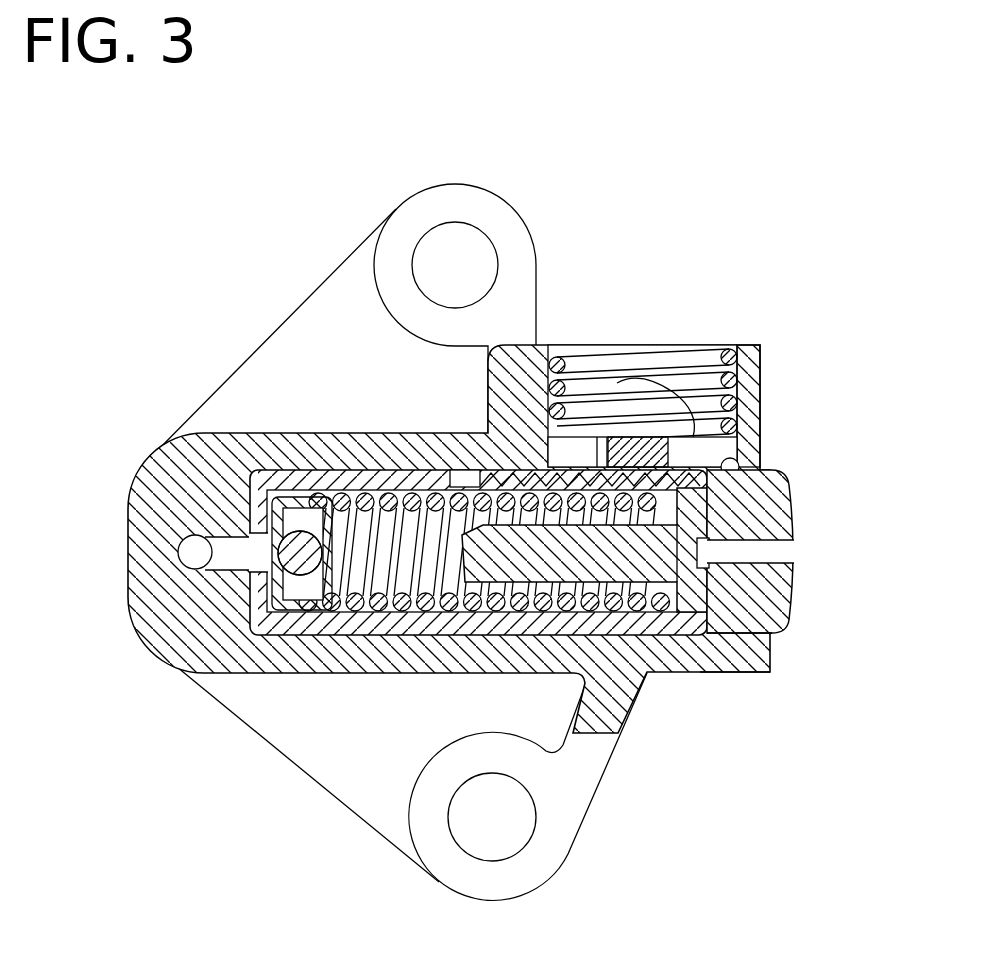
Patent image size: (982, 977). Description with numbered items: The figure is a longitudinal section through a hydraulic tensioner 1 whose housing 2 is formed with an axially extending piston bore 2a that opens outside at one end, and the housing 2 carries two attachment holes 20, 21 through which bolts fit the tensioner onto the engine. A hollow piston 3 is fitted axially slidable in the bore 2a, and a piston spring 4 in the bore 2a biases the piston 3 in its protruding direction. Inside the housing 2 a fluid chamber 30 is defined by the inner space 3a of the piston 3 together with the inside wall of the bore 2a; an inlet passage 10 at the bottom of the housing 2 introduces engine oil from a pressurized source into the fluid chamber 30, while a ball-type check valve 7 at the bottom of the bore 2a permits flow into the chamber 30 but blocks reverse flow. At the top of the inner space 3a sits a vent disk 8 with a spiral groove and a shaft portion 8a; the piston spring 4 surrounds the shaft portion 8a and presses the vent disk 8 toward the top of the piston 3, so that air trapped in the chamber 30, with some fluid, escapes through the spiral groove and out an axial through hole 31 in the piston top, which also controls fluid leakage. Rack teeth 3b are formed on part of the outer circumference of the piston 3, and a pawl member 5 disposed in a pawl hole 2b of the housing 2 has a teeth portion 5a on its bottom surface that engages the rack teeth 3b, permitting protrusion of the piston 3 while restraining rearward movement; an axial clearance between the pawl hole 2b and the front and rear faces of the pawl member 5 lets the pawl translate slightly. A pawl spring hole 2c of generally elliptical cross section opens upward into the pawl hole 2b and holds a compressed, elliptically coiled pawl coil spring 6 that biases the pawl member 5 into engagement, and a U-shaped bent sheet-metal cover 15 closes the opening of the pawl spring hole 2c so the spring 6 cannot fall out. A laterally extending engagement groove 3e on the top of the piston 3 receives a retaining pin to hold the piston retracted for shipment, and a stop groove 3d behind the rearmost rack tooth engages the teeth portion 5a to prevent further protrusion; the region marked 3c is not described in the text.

The hydraulic tensioner 1 is at (242, 288).
The housing 2 is at (152, 436).
The piston bore 2a is at (758, 672).
The pawl hole 2b is at (740, 447).
The pawl spring hole 2c is at (563, 356).
The hollow piston 3 is at (478, 550).
The inner space 3a is at (352, 470).
The rack teeth 3b is at (470, 436).
The end cap bottom 3c is at (748, 630).
The stop groove 3d is at (437, 468).
The engagement groove 3e is at (778, 579).
The piston spring 4 is at (446, 640).
The pawl member 5 is at (580, 456).
The teeth portion 5a is at (705, 400).
The pawl coil spring 6 is at (728, 346).
The check valve 7 is at (278, 628).
The vent disk 8 is at (595, 614).
The shaft portion 8a is at (525, 612).
The inlet passage 10 is at (190, 562).
The cover 15 is at (667, 345).
The attachment hole 20 is at (459, 224).
The attachment hole 21 is at (500, 858).
The fluid chamber 30 is at (277, 642).
The through hole 31 is at (795, 556).